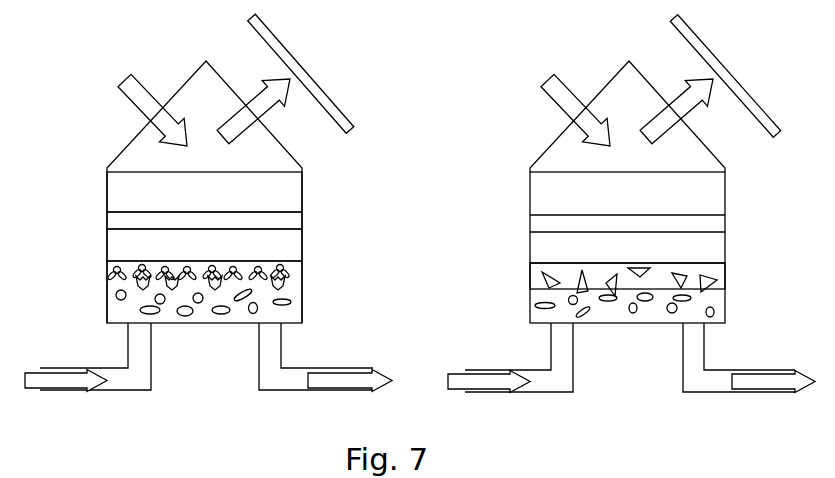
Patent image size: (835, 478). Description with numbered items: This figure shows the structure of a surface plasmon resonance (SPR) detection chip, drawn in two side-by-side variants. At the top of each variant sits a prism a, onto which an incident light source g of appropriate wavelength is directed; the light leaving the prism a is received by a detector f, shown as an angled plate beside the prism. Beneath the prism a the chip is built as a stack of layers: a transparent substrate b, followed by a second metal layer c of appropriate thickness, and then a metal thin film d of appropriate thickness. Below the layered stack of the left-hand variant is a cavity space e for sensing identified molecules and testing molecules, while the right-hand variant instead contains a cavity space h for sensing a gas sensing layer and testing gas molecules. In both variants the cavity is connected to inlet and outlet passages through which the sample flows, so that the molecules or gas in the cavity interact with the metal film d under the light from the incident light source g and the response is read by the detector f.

The prism a is at (128, 153).
The transparent substrate b is at (112, 188).
The second metal layer c is at (112, 222).
The metal thin film d is at (112, 243).
The cavity space for sensing identified molecules and testing molecules e is at (112, 308).
The detector f is at (335, 137).
The incident light source g is at (128, 101).
The cavity space for sensing a gas sensing layer and testing gas molecules h is at (523, 293).